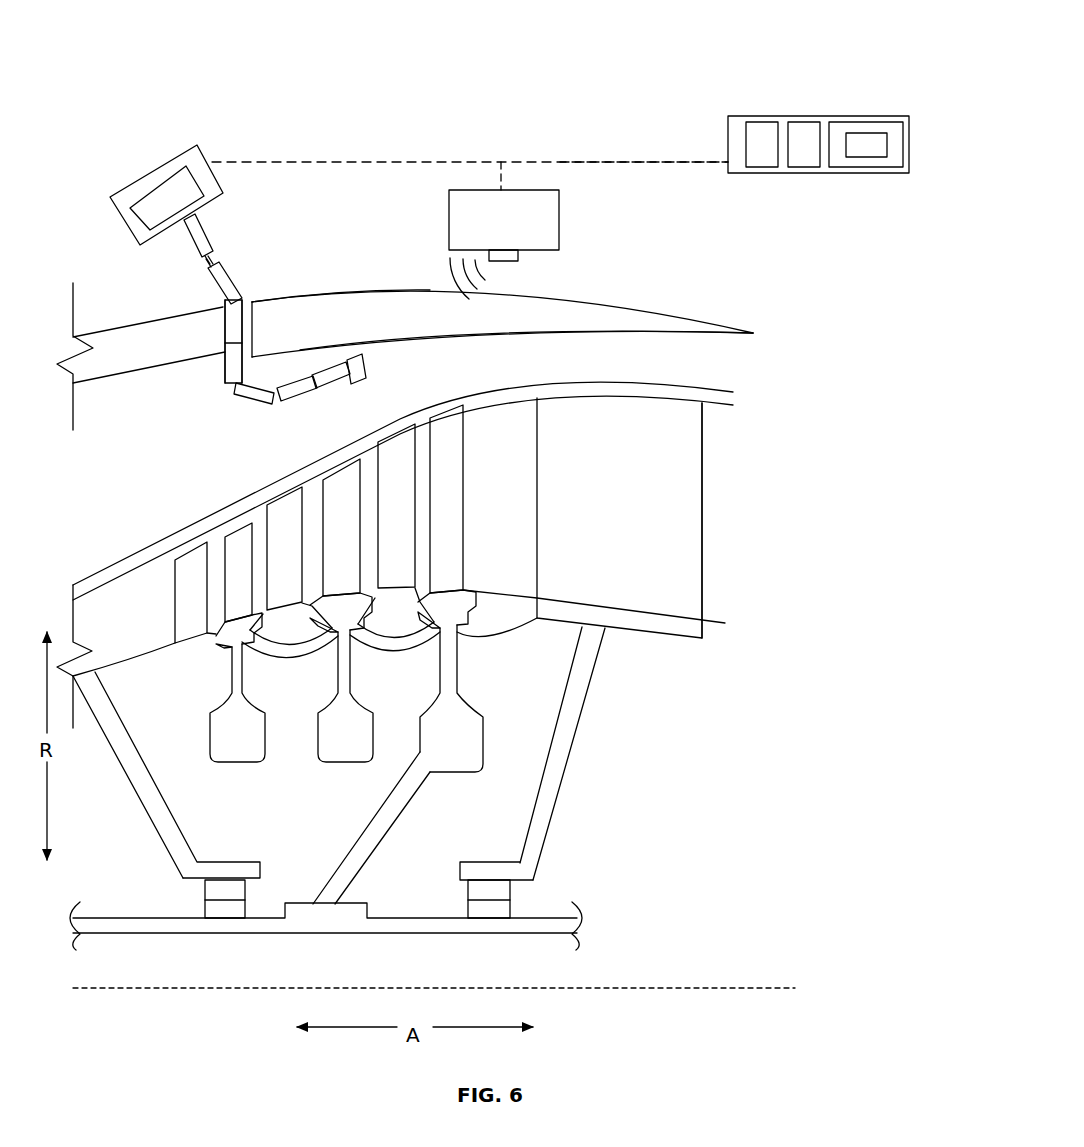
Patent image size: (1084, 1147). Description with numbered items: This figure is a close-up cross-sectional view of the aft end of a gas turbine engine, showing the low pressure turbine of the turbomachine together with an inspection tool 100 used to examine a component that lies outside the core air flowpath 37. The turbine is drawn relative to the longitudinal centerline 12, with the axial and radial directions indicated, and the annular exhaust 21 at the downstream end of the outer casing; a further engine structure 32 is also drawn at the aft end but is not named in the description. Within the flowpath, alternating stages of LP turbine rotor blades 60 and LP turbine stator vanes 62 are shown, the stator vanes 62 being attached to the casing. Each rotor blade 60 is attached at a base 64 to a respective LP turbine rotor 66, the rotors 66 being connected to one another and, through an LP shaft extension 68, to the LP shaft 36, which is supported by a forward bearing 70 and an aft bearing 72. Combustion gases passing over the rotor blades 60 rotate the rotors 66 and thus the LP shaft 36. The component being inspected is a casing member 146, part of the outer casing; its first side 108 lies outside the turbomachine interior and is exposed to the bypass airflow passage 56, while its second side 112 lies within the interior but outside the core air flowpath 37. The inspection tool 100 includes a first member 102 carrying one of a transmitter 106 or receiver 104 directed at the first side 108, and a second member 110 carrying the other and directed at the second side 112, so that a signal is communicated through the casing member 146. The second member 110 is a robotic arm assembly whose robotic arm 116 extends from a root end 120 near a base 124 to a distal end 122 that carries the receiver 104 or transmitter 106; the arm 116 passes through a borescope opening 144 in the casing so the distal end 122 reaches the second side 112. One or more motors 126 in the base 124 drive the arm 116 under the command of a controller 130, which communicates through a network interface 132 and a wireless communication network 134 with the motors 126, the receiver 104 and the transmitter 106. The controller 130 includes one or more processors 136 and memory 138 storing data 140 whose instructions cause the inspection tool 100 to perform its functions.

The inspection tool 100 is at (716, 33).
The second member 110 is at (233, 145).
The base 124 is at (197, 147).
The motors 126 is at (150, 207).
The root end 120 is at (214, 231).
The robotic arm 116 is at (222, 301).
The borescope opening 144 is at (221, 338).
The distal end 122 is at (326, 361).
The receiver 104 is at (363, 366).
The first side 108 is at (394, 278).
The casing member 146 is at (320, 306).
The second side 112 is at (450, 340).
The bypass airflow passage 56 is at (364, 214).
The first member 102 is at (560, 218).
The transmitter 106 is at (521, 260).
The wireless communication network 134 is at (672, 158).
The controller 130 is at (835, 117).
The network interface 132 is at (762, 130).
The processors 136 is at (803, 130).
The memory 138 is at (890, 118).
The data 140 is at (880, 149).
The core air flowpath 37 is at (112, 604).
The LP turbine rotor blades 60 is at (233, 568).
The LP turbine stator vanes 62 is at (294, 506).
The turbine component 32 is at (648, 443).
The annular exhaust 21 is at (730, 610).
The base 64 is at (231, 653).
The LP turbine rotor 66 is at (233, 692).
The LP shaft extension 68 is at (390, 829).
The forward bearing 70 is at (247, 900).
The aft bearing 72 is at (512, 900).
The LP shaft 36 is at (123, 917).
The longitudinal centerline 12 is at (678, 987).